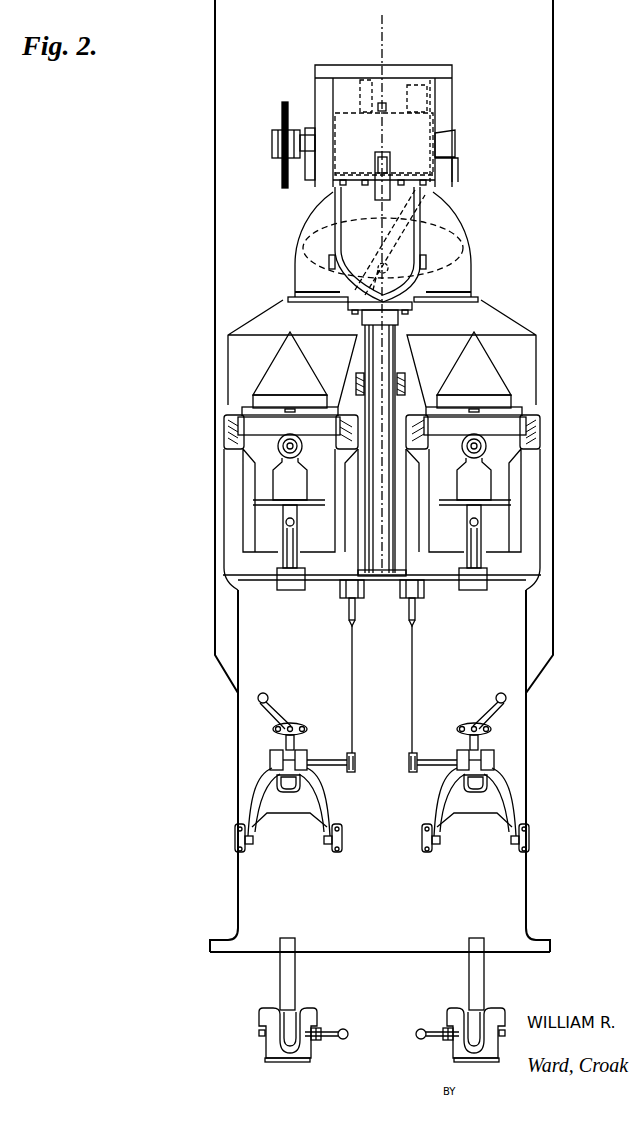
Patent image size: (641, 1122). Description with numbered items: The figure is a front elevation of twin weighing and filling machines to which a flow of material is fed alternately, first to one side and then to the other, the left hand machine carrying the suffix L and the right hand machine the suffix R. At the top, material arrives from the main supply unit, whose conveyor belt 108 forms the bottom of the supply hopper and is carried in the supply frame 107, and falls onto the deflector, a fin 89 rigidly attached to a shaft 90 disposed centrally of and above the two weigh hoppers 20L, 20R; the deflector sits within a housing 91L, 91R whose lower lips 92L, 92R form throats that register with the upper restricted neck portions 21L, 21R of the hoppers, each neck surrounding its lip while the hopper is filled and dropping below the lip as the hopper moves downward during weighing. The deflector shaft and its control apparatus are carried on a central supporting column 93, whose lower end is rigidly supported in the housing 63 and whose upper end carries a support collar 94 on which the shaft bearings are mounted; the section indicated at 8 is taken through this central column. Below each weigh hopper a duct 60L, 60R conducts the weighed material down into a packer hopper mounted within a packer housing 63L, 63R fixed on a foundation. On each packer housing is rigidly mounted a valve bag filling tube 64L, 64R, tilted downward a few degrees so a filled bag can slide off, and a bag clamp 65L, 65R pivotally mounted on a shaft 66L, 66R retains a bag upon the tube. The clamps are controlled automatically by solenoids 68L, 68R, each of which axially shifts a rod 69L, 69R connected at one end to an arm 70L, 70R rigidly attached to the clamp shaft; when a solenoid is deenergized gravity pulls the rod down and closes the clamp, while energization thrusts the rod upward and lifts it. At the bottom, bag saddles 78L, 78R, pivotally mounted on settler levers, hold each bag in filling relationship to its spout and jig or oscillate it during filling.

The section line 8 is at (398, 40).
The housing of control mechanism 107 is at (395, 96).
The conveyor belt 108 is at (371, 108).
The fin 89 is at (412, 190).
The shaft 90 is at (461, 276).
The deflector housing 91L is at (296, 247).
The deflector housing 91R is at (470, 247).
The lower lip 92L is at (312, 292).
The lower lip 92R is at (455, 293).
The neck portion 21L is at (290, 297).
The neck portion 21R is at (476, 298).
The support collar 94 is at (408, 313).
The central supporting column 93 is at (394, 368).
The weigh hopper 20L is at (243, 357).
The weigh hopper 20R is at (525, 357).
The duct 60L is at (235, 488).
The duct 60R is at (473, 502).
The housing 63 is at (389, 608).
The packer housing 63L is at (236, 740).
The packer housing 63R is at (532, 683).
The solenoid 68L is at (338, 588).
The solenoid 68R is at (415, 590).
The rod 69L is at (350, 642).
The rod 69R is at (415, 643).
The arm 70L is at (348, 757).
The arm 70R is at (413, 757).
The shaft 66L is at (332, 767).
The shaft 66R is at (433, 766).
The bag clamp 65L is at (277, 780).
The bag clamp 65R is at (487, 780).
The valve bag filling tube 64L is at (277, 792).
The valve bag filling tube 64R is at (484, 793).
The bag saddle 78L is at (262, 1015).
The bag saddle 78R is at (446, 1015).